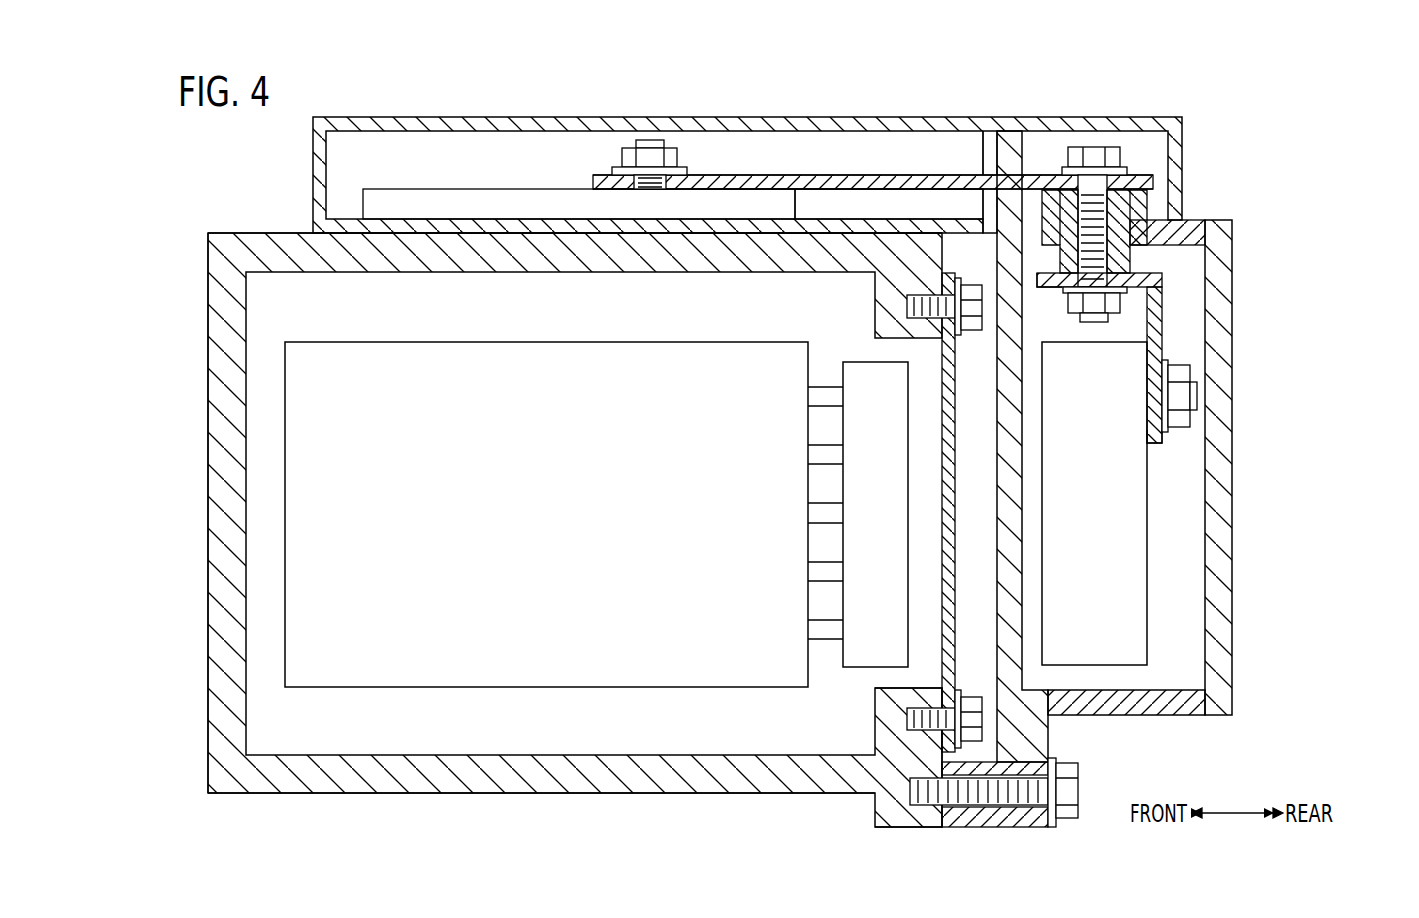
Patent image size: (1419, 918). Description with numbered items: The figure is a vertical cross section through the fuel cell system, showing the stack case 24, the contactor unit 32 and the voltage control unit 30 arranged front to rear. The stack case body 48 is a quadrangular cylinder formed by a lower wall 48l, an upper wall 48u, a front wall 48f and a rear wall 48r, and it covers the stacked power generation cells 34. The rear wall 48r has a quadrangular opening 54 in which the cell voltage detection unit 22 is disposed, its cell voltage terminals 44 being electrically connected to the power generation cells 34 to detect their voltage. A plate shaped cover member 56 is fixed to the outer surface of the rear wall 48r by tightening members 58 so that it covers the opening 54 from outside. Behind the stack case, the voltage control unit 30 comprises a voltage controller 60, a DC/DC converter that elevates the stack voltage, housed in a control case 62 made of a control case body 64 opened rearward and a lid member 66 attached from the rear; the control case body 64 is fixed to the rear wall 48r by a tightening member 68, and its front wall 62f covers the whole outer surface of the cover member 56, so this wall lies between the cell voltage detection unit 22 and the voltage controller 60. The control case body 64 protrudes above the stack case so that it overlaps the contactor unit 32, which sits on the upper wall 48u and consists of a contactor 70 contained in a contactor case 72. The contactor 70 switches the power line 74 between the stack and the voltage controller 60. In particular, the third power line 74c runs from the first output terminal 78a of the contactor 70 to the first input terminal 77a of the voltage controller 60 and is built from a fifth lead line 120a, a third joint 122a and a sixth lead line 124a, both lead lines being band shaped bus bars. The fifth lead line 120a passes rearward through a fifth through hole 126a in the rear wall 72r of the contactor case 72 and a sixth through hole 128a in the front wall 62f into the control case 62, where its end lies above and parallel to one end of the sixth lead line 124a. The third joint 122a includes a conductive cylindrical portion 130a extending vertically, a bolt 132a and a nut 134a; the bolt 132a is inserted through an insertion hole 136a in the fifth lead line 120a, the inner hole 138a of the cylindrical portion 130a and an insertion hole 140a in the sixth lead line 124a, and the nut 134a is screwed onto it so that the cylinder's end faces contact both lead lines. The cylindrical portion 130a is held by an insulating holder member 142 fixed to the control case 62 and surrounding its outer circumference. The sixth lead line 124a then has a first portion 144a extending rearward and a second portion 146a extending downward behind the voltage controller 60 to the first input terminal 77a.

The cell voltage detection unit 22 is at (848, 677).
The stack case 24 is at (210, 760).
The voltage control unit 30 is at (1205, 150).
The contactor unit 32 is at (353, 110).
The power generation cells 34 is at (368, 670).
The cell voltage terminals 44 is at (815, 572).
The stack case body 48 is at (208, 793).
The upper wall 48u is at (288, 233).
The front wall 48f is at (208, 440).
The lower wall 48l is at (506, 790).
The rear wall 48r is at (898, 808).
The opening 54 is at (918, 540).
The cover member 56 is at (948, 460).
The tightening members 58 is at (915, 303).
The voltage controller 60 is at (1137, 507).
The control case 62 is at (1237, 672).
The front wall 62f is at (1033, 147).
The control case body 64 is at (1142, 712).
The lid member 66 is at (1228, 568).
The tightening member 68 is at (1068, 793).
The contactor 70 is at (550, 200).
The contactor case 72 is at (313, 140).
The rear wall 72r is at (995, 150).
The power line 74 is at (1051, 160).
The third power line 74c is at (808, 178).
The first input terminal 77a is at (1198, 395).
The first output terminal 78a is at (648, 158).
The fifth lead line 120a is at (790, 176).
The third joint 122a is at (1360, 215).
The sixth lead line 124a is at (1152, 443).
The fifth through hole 126a is at (990, 152).
The sixth through hole 128a is at (1003, 170).
The cylindrical portion 130a is at (1125, 238).
The bolt 132a is at (1103, 252).
The nut 134a is at (1115, 305).
The insertion hole 136a is at (1095, 188).
The inner hole 138a is at (1103, 213).
The insertion hole 140a is at (1095, 322).
The holder member 142 is at (1050, 210).
The first portion 144a is at (1050, 287).
The second portion 146a is at (1163, 350).